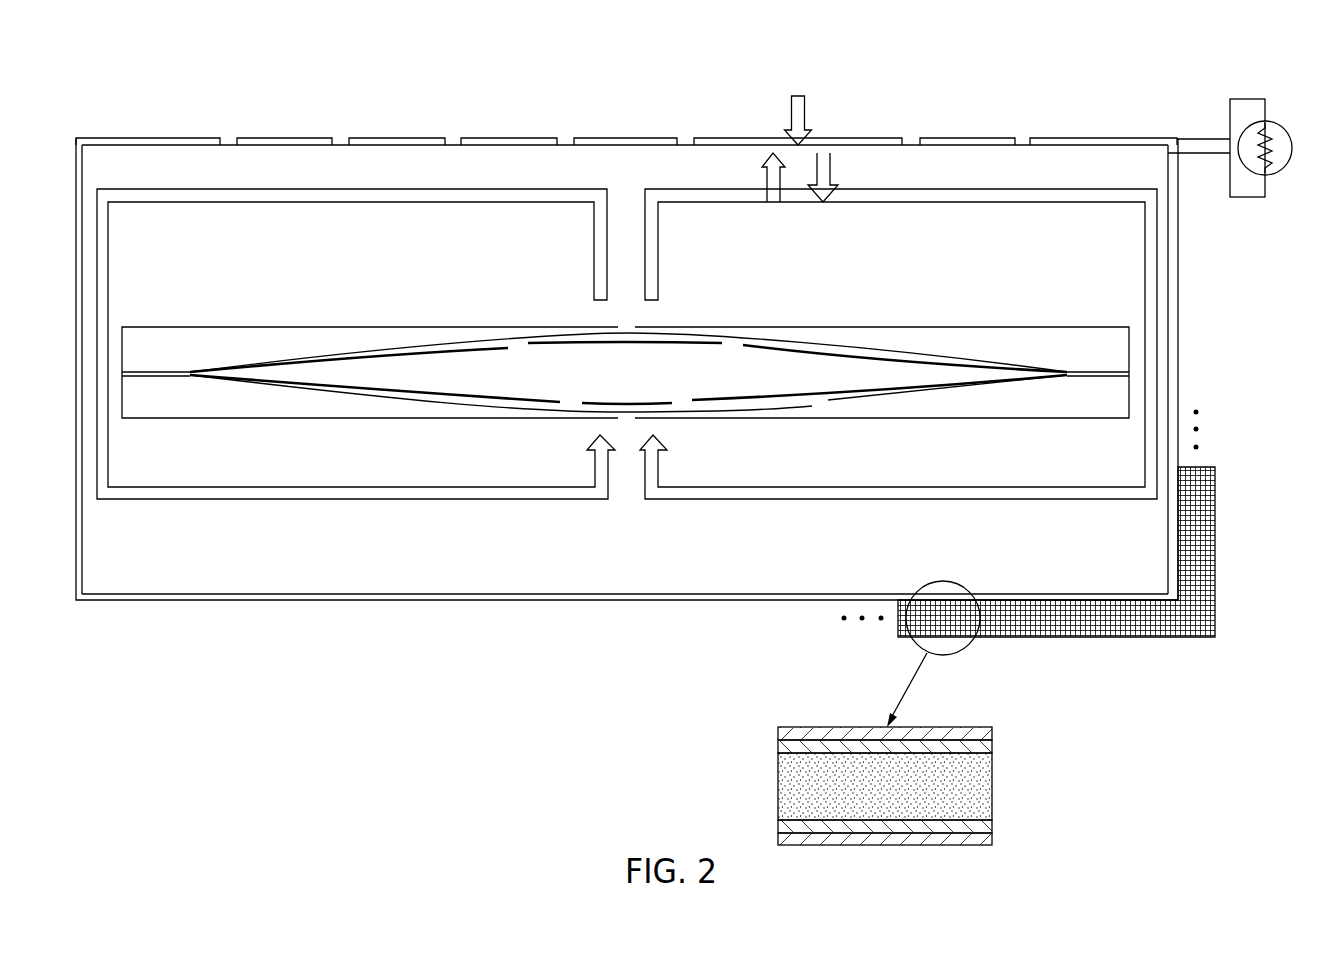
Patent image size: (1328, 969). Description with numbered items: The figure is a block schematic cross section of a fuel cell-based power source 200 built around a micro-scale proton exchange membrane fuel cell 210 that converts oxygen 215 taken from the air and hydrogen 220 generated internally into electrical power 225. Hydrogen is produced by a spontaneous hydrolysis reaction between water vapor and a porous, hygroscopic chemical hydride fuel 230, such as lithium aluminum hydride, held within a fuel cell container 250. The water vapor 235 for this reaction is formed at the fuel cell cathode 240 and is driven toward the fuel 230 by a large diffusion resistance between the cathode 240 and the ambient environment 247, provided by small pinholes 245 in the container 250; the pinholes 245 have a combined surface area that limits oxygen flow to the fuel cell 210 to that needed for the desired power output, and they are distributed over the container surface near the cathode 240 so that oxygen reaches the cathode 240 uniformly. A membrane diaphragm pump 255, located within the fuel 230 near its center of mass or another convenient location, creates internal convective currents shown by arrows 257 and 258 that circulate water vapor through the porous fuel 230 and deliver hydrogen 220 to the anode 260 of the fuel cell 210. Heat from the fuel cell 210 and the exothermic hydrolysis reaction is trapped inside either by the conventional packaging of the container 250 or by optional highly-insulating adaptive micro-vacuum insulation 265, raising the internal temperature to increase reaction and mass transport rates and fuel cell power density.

The fuel cell-based power source 200 is at (116, 70).
The proton exchange membrane fuel cell 210 is at (100, 150).
The oxygen 215 is at (806, 104).
The hydrogen 220 is at (761, 163).
The electrical power 225 is at (1248, 100).
The chemical hydride fuel 230 is at (443, 565).
The water vapor 235 is at (836, 163).
The fuel cell cathode 240 is at (565, 142).
The pinholes 245 is at (228, 140).
The ambient environment 247 is at (973, 130).
The fuel cell container 250 is at (147, 137).
The membrane diaphragm pump 255 is at (940, 335).
The arrow 257 is at (350, 188).
The arrow 258 is at (995, 188).
The anode 260 is at (190, 153).
The adaptive micro-vacuum insulation 265 is at (1215, 550).